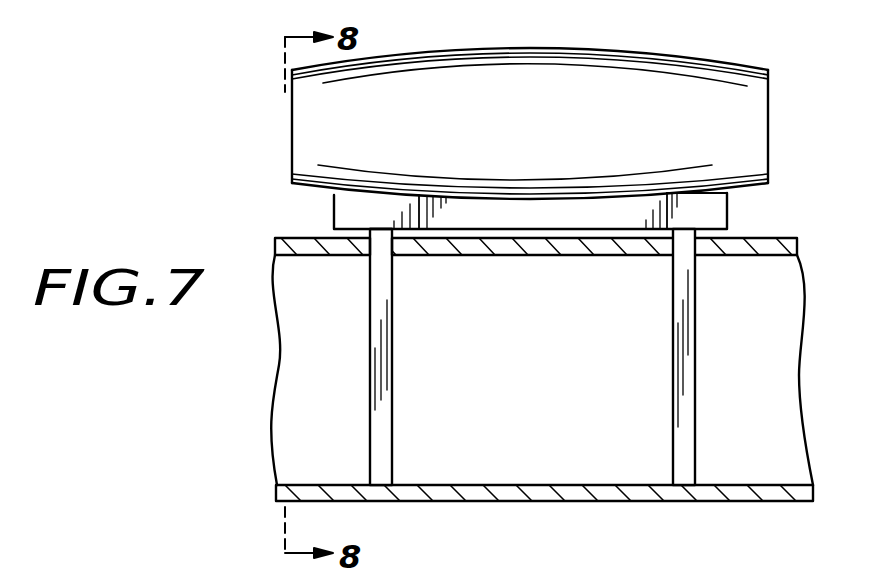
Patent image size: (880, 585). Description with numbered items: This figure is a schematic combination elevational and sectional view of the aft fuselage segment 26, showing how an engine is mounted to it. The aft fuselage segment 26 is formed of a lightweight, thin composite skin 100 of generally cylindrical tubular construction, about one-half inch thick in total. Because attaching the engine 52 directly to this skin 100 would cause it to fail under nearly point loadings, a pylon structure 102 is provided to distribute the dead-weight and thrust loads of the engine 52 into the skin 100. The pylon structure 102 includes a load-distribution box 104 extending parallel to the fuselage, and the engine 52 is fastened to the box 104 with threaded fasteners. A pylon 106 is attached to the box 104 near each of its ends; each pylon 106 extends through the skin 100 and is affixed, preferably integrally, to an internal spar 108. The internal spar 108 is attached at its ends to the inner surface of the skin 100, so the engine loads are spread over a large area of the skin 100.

The engine 52 is at (676, 70).
The skin 100 is at (290, 238).
The pylon structure 102 is at (320, 203).
The load-distribution box 104 is at (545, 211).
The pylon 106 is at (364, 230).
The internal spar 108 is at (393, 335).
The aft fuselage segment 26 is at (483, 506).